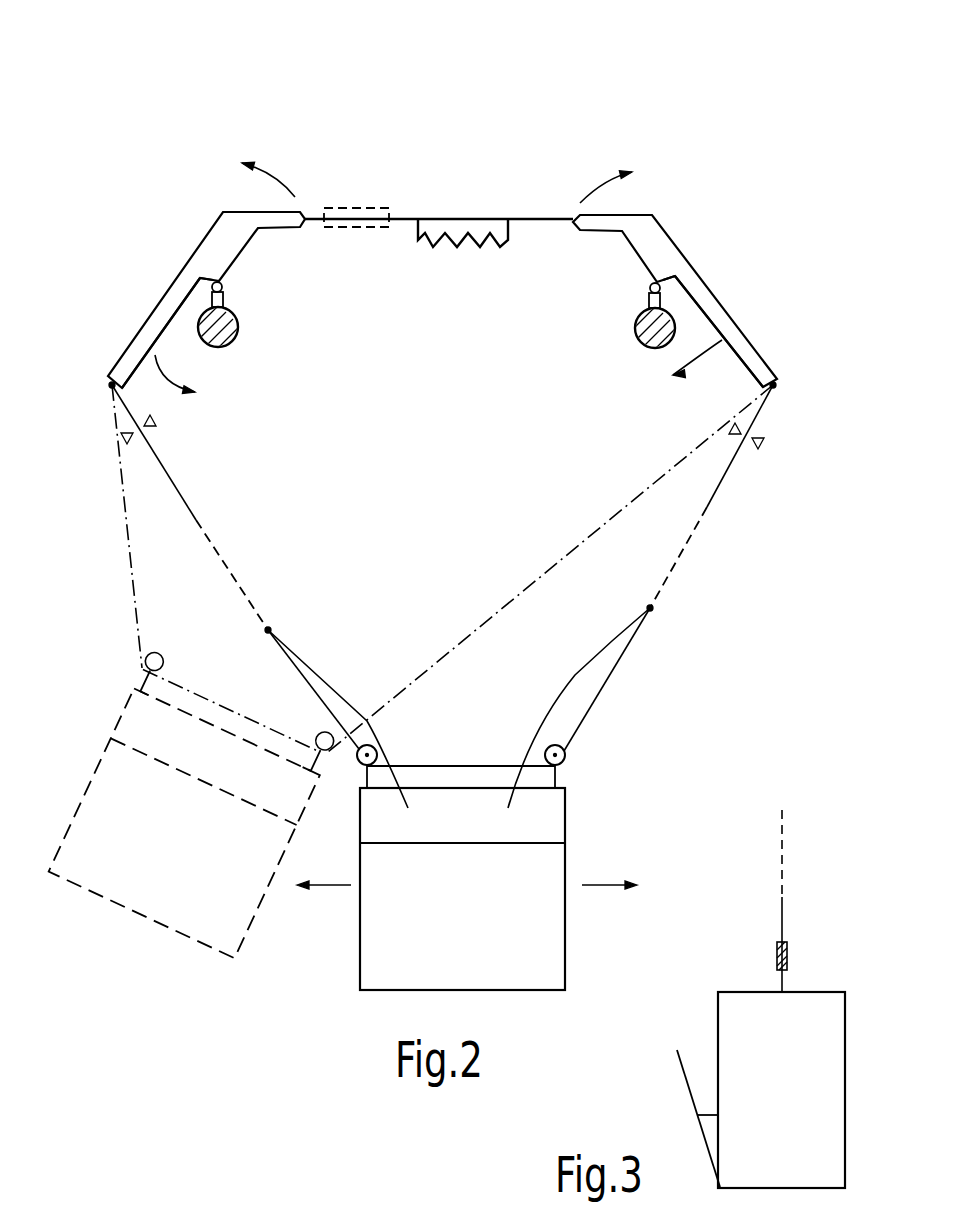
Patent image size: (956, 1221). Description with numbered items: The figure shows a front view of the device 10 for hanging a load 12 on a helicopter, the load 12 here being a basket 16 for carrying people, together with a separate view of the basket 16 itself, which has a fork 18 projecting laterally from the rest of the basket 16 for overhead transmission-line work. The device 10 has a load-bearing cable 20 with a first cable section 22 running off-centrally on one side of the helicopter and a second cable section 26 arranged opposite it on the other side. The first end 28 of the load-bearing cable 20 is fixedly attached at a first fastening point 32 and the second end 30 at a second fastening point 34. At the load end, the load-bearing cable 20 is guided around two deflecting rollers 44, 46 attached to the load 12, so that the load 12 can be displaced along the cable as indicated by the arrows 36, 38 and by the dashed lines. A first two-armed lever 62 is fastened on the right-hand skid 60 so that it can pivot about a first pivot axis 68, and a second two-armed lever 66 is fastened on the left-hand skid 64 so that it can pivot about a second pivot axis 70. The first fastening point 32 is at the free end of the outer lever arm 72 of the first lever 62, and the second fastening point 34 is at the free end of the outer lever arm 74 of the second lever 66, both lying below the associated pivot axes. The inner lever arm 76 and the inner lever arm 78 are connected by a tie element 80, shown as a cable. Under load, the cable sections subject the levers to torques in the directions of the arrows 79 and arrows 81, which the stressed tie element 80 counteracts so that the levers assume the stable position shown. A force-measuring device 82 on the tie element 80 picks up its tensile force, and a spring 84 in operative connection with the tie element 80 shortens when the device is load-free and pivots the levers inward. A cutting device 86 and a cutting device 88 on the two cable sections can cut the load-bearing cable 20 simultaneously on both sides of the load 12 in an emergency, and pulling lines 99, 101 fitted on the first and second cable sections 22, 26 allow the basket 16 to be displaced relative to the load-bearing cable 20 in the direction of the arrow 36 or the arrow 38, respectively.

In FIG. 2, the device 10 is at (430, 137).
In FIG. 2, the load 12 is at (348, 980).
In FIG. 3, the load 12 is at (833, 973).
In FIG. 2, the basket 16 is at (547, 930).
In FIG. 3, the basket 16 is at (820, 1105).
In FIG. 3, the fork 18 is at (692, 1100).
In FIG. 2, the load-bearing cable 20 is at (245, 576).
In FIG. 3, the load-bearing cable 20 is at (770, 908).
In FIG. 2, the first cable section 22 is at (178, 490).
In FIG. 2, the second cable section 26 is at (636, 638).
In FIG. 2, the first end 28 is at (113, 416).
In FIG. 2, the second end 30 is at (762, 413).
In FIG. 2, the first fastening point 32 is at (106, 382).
In FIG. 2, the second fastening point 34 is at (783, 386).
In FIG. 2, the arrow 36 is at (330, 886).
In FIG. 2, the arrow 38 is at (602, 884).
In FIG. 2, the deflecting roller 44 is at (349, 782).
In FIG. 2, the deflecting roller 46 is at (575, 753).
In FIG. 3, the deflecting roller 46 is at (801, 901).
In FIG. 2, the right-hand skid 60 is at (238, 340).
In FIG. 2, the first two-armed lever 62 is at (165, 258).
In FIG. 2, the left-hand skid 64 is at (635, 328).
In FIG. 2, the second two-armed lever 66 is at (701, 263).
In FIG. 2, the first pivot axis 68 is at (223, 287).
In FIG. 2, the second pivot axis 70 is at (650, 289).
In FIG. 2, the outer lever arm 72 is at (148, 332).
In FIG. 2, the outer lever arm 74 is at (725, 312).
In FIG. 2, the inner lever arm 76 is at (235, 228).
In FIG. 2, the inner lever arm 78 is at (610, 223).
In FIG. 2, the arrows 79 is at (275, 178).
In FIG. 2, the tie element 80 is at (532, 219).
In FIG. 2, the arrows 81 is at (583, 200).
In FIG. 2, the force-measuring device 82 is at (353, 207).
In FIG. 2, the spring 84 is at (472, 245).
In FIG. 2, the cutting device 86 is at (118, 445).
In FIG. 2, the cutting device 88 is at (765, 447).
In FIG. 2, the pulling line 99 is at (322, 672).
In FIG. 2, the pulling line 101 is at (587, 660).